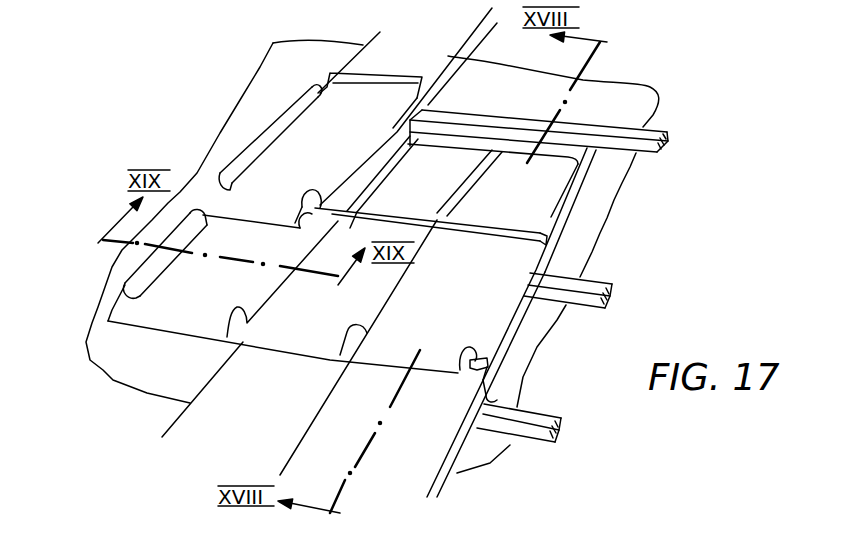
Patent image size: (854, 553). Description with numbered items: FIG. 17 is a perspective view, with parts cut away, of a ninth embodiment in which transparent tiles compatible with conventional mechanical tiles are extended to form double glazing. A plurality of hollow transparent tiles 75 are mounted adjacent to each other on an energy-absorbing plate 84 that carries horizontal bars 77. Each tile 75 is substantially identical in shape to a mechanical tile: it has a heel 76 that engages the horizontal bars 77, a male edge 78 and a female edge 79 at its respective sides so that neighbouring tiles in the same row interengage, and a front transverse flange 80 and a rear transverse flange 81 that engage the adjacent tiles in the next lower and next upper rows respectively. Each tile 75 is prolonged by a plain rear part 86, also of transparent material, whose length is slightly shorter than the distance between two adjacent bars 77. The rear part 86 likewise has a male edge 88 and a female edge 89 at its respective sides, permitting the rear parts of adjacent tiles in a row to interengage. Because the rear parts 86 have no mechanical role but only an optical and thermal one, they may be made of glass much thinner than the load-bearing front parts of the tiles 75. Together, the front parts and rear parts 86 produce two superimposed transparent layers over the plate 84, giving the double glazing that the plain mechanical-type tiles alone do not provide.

The hollow transparent tile 75 is at (487, 308).
The heel 76 is at (490, 400).
The horizontal bars 77 is at (672, 135).
The male edge 78 is at (498, 335).
The female edge 79 is at (253, 143).
The front transverse flange 80 is at (217, 203).
The rear transverse flange 81 is at (555, 222).
The energy-absorbing plate 84 is at (573, 257).
The rear part 86 is at (550, 183).
The male edge 88 is at (583, 163).
The female edge 89 is at (497, 150).